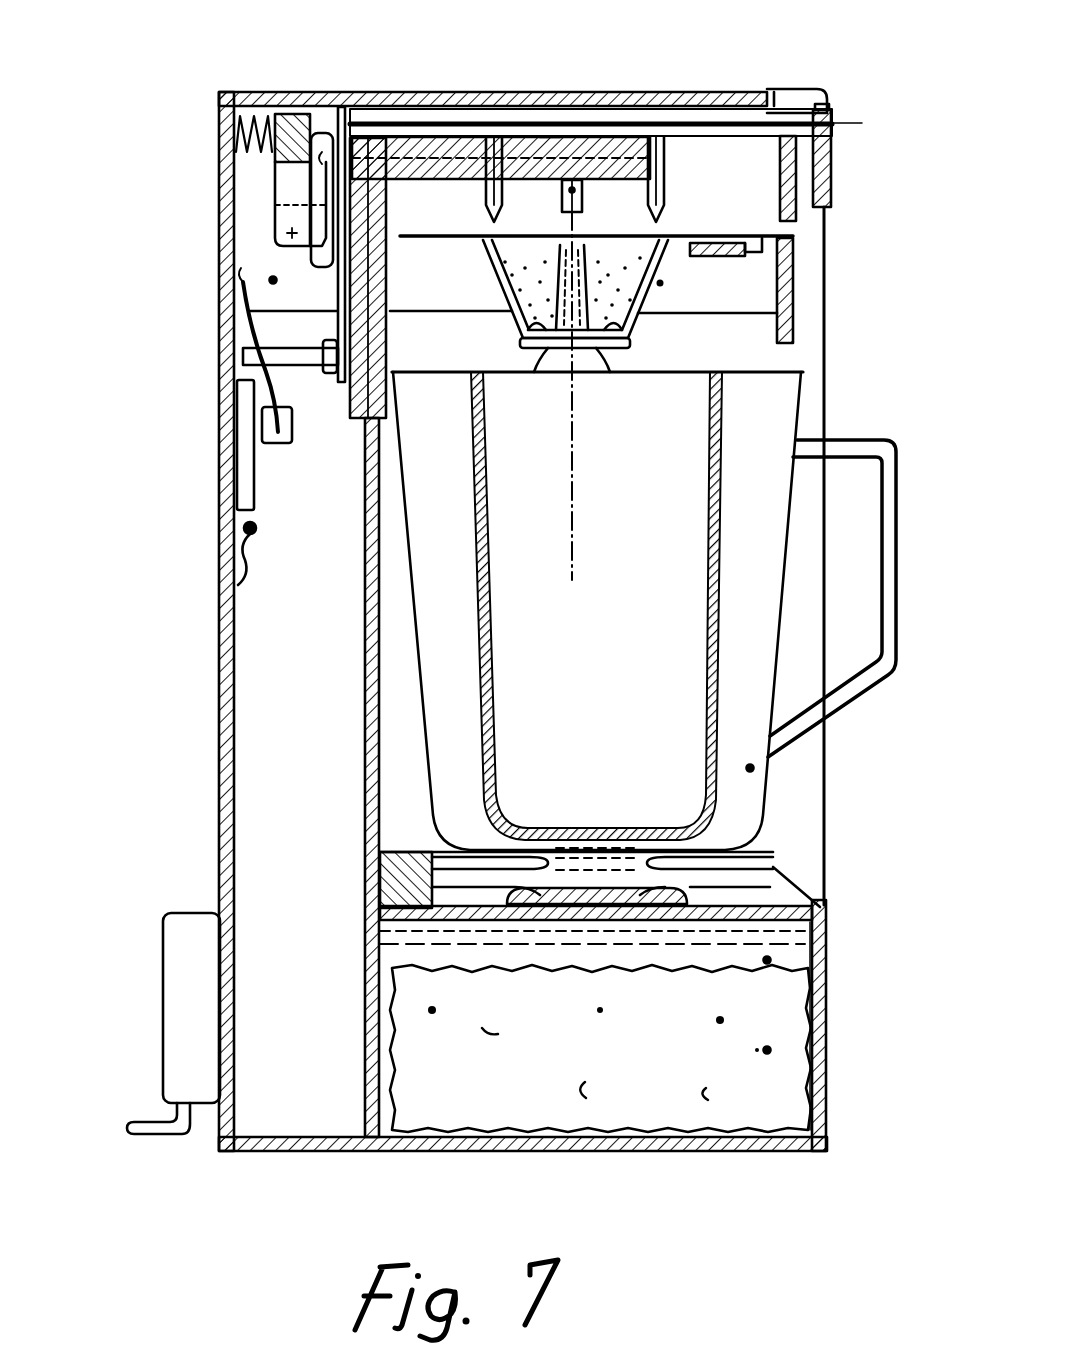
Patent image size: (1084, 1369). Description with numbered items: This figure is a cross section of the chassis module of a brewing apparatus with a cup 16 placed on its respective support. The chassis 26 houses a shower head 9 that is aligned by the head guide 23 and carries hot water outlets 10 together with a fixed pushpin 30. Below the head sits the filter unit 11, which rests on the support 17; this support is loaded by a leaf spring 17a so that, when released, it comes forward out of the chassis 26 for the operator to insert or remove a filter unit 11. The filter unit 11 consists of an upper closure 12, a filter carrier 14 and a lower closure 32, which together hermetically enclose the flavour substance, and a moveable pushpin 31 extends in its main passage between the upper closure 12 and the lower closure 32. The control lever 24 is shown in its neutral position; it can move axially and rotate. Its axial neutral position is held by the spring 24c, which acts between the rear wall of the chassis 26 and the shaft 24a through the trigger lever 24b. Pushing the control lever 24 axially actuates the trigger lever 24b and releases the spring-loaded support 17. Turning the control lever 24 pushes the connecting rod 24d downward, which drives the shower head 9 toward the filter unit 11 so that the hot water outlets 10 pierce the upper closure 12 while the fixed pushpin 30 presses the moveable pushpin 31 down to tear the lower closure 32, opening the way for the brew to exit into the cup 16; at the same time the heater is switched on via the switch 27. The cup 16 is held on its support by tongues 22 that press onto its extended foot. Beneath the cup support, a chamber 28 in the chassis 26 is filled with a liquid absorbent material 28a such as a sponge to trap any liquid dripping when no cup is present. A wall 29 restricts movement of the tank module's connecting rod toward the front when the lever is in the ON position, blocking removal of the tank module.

The shower head 9 is at (612, 160).
The hot water outlets 10 is at (485, 196).
The filter unit 11 is at (660, 283).
The upper closure 12 is at (508, 236).
The filter carrier 14 is at (500, 287).
The cup 16 is at (750, 768).
The support 17 is at (273, 280).
The leaf spring 17a is at (253, 325).
The tongues 22 is at (770, 862).
The head guide 23 is at (382, 317).
The control lever 24 is at (833, 177).
The shaft 24a is at (770, 90).
The trigger lever 24b is at (300, 90).
The spring 24c is at (258, 92).
The connecting rod 24d is at (310, 200).
The chassis 26 is at (440, 92).
The switch 27 is at (243, 423).
The chamber 28 is at (767, 960).
The liquid absorbent material 28a is at (767, 1050).
The wall 29 is at (372, 525).
The fixed pushpin 30 is at (552, 135).
The moveable pushpin 31 is at (583, 335).
The lower closure 32 is at (538, 338).